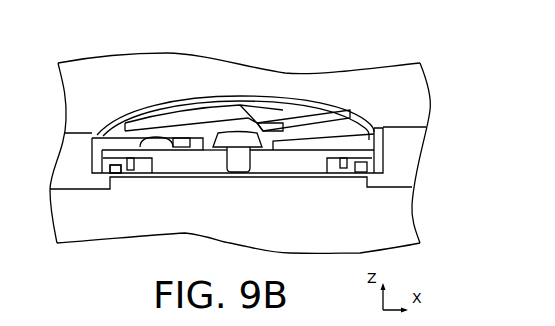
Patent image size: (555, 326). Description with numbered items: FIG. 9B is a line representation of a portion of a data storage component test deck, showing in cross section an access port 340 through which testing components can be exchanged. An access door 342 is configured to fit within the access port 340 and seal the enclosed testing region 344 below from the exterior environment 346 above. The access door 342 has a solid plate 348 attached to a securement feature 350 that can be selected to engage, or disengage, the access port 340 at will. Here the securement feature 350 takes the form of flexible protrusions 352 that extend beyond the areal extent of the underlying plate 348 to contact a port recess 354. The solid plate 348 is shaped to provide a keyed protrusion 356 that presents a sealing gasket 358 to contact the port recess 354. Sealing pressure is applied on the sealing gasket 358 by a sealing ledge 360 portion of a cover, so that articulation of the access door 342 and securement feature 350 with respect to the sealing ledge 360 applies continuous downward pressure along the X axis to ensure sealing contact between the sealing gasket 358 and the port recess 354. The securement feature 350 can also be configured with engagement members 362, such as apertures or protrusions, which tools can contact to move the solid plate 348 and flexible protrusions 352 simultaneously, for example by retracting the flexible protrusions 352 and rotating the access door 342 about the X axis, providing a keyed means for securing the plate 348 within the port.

The access port 340 is at (360, 60).
The access door 342 is at (270, 174).
The enclosed testing region 344 is at (93, 231).
The exterior environment 346 is at (113, 88).
The solid plate 348 is at (197, 177).
The securement feature 350 is at (146, 112).
The flexible protrusion 352 is at (323, 113).
The port recess 354 is at (86, 160).
The keyed protrusion 356 is at (385, 163).
The sealing gasket 358 is at (118, 179).
The sealing ledge 360 is at (92, 130).
The engagement member 362 is at (3, 31).